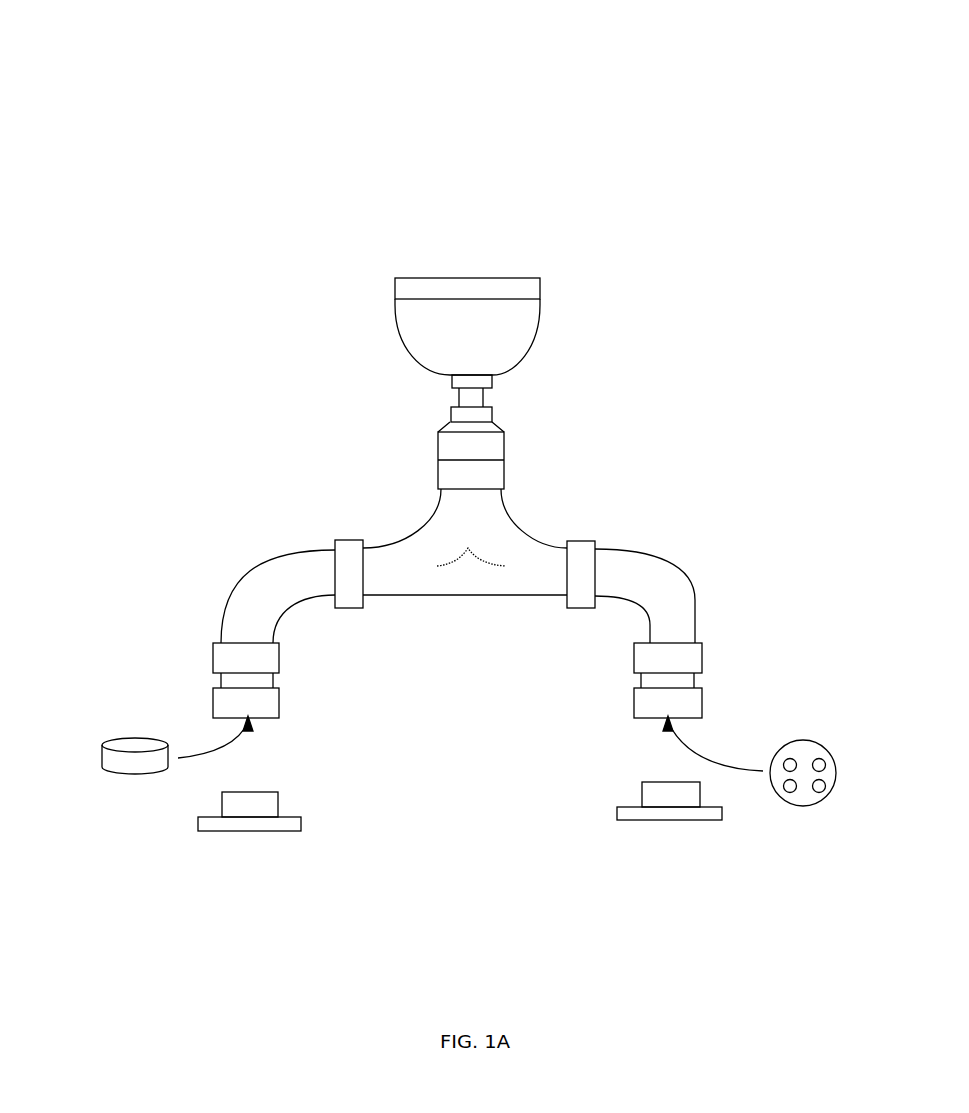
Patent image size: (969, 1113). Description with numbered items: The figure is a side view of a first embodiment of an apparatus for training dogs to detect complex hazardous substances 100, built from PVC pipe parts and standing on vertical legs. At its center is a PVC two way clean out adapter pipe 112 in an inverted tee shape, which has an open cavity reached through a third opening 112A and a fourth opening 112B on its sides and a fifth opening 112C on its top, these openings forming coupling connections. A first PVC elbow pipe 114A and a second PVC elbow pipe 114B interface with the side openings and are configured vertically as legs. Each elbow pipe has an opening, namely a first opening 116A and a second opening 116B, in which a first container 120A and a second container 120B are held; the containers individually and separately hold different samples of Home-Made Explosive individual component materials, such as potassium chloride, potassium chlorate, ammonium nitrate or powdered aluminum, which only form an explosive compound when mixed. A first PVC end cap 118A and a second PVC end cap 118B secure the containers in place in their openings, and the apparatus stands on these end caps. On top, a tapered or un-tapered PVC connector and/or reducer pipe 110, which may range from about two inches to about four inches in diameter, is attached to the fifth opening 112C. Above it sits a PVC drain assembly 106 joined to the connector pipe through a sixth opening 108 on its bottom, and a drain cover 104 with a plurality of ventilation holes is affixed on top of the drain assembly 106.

The apparatus for training dogs to detect complex hazardous substances 100 is at (258, 230).
The drain cover 104 is at (552, 283).
The PVC drain assembly 106 is at (397, 343).
The sixth opening 108 is at (497, 387).
The PVC connector and/or reducer pipe 110 is at (428, 420).
The PVC two way clean out adapter pipe 112 is at (503, 600).
The third opening 112A is at (337, 530).
The fourth opening 112B is at (595, 530).
The fifth opening 112C is at (515, 485).
The first PVC elbow pipe 114A is at (223, 597).
The second PVC elbow pipe 114B is at (702, 583).
The first opening 116A is at (203, 717).
The second opening 116B is at (627, 717).
The first PVC end cap 118A is at (263, 831).
The second PVC end cap 118B is at (683, 820).
The first container 120A is at (95, 768).
The second container 120B is at (812, 820).